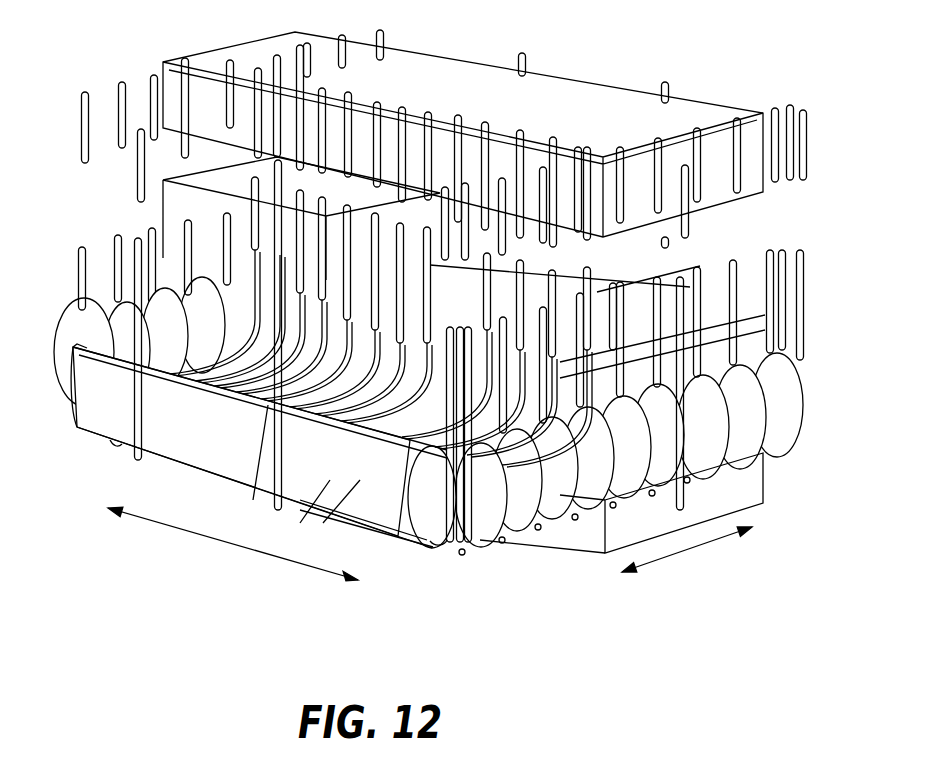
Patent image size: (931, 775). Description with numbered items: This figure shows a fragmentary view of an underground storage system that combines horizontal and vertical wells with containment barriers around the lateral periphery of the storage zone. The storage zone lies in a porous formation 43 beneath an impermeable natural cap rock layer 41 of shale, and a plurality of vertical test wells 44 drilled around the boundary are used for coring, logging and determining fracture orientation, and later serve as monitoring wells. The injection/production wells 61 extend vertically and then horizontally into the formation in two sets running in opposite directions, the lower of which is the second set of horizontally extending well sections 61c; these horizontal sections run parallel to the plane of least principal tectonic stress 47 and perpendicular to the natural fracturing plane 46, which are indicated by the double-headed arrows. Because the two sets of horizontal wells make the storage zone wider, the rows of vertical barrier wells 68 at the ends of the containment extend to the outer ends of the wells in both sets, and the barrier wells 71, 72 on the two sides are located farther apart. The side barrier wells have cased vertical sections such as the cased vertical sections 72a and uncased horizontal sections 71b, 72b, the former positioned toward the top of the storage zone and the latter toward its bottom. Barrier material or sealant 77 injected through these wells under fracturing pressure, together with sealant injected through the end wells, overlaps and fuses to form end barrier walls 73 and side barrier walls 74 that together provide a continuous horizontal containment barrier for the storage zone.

The upper impermeable natural cap rock layer 41 is at (160, 233).
The porous formation 43 is at (150, 243).
The vertical test wells 44 is at (140, 160).
The natural fracturing plane 46 is at (295, 560).
The plane of least principal tectonic stress 47 is at (683, 551).
The injection/production wells 61 is at (253, 72).
The second set of horizontally extending well sections 61c is at (345, 505).
The vertical barrier wells 68 is at (122, 82).
The barrier wells 71 is at (453, 190).
The uncased horizontal sections 71b is at (260, 460).
The barrier wells 72 is at (540, 170).
The cased vertical sections 72a is at (444, 545).
The uncased horizontal sections 72b is at (118, 437).
The end barrier walls 73 is at (108, 295).
The side barrier walls 74 is at (100, 400).
The barrier material or sealant 77 is at (210, 452).